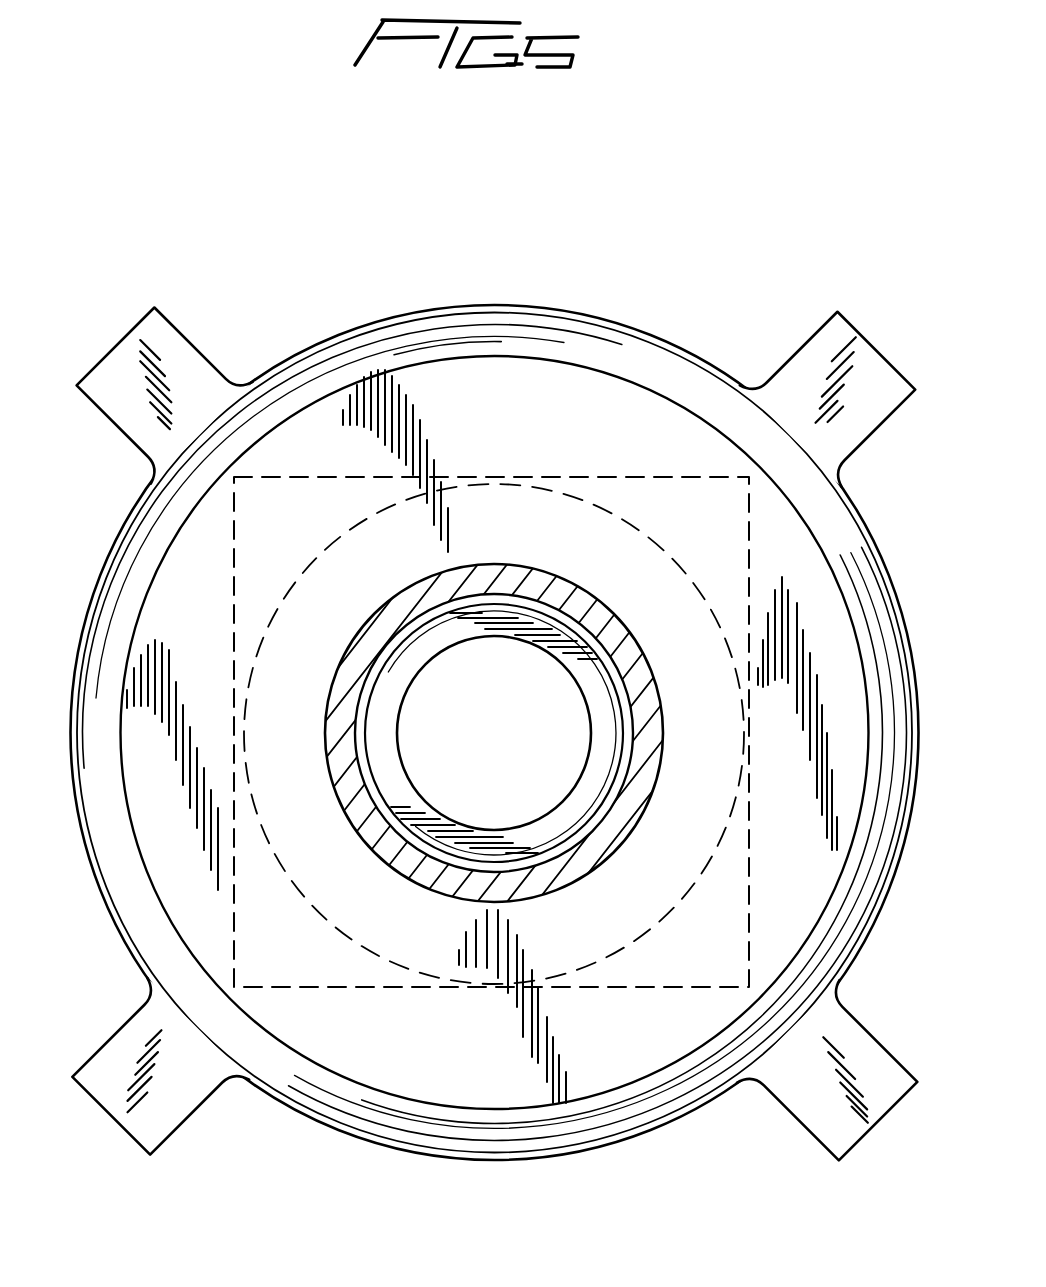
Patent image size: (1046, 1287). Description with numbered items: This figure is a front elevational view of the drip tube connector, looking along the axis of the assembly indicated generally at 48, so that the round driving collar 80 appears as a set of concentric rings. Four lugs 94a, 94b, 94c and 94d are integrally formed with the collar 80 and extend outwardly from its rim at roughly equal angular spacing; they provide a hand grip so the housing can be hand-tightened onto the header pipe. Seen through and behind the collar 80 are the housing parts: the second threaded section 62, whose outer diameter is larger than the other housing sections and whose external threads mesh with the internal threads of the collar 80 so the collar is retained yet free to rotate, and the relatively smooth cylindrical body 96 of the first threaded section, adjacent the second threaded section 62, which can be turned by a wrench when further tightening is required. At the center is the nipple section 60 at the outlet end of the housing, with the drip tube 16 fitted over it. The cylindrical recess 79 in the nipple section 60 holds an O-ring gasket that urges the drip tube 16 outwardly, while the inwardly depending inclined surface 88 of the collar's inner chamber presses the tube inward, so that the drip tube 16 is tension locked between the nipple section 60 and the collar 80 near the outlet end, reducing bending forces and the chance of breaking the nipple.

The rotor disc assembly 48 is at (567, 297).
The driving collar 80 is at (450, 312).
The lug 94a is at (803, 355).
The lug 94b is at (818, 1122).
The lug 94c is at (183, 1113).
The lug 94d is at (170, 327).
The second threaded section 62 is at (660, 477).
The smooth cylindrical body 96 is at (324, 550).
The inclined surface 88 is at (481, 565).
The drip tube 16 is at (536, 570).
The cylindrical recess 79 is at (622, 706).
The nipple section 60 is at (630, 770).